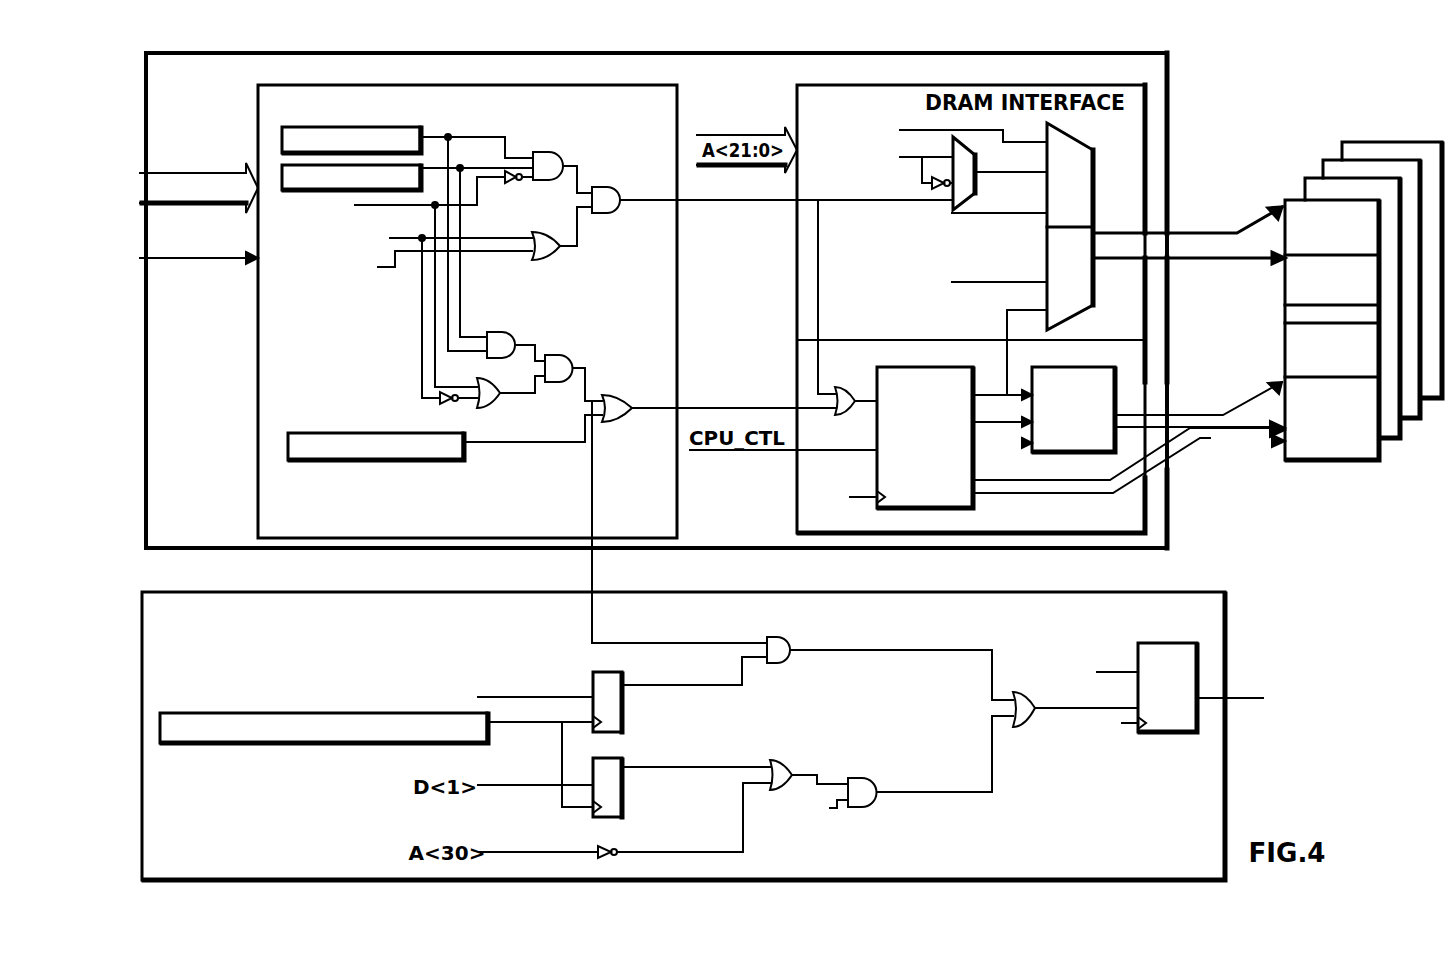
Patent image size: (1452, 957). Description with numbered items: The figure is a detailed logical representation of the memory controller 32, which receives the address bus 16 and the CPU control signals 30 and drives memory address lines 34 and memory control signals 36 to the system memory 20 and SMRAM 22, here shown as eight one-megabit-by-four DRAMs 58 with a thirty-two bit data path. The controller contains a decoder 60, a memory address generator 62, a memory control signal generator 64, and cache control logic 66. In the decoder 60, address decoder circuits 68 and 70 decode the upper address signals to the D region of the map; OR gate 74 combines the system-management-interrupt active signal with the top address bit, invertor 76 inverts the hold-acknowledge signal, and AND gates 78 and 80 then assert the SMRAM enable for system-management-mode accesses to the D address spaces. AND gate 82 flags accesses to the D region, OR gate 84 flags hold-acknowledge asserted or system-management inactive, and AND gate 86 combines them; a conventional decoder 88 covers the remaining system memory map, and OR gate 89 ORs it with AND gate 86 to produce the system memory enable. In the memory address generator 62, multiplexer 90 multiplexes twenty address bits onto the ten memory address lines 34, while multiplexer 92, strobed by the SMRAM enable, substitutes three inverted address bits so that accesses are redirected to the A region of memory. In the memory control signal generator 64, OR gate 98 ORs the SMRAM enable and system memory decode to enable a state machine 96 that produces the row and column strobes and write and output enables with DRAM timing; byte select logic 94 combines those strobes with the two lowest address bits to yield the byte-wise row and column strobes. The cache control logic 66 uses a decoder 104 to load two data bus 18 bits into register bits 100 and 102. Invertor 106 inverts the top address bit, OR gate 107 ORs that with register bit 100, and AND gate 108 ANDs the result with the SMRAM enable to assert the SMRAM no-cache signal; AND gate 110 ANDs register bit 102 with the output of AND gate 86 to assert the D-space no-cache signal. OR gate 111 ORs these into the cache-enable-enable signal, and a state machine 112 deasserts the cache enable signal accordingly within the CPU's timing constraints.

The address bus 16 is at (185, 172).
The data bus 18 is at (533, 722).
The system memory 20 is at (1330, 462).
The SMRAM 22 is at (1285, 349).
The CPU control signals 30 is at (180, 262).
The memory controller 32 is at (1169, 56).
The memory address lines 34 is at (1205, 262).
The memory control signals 36 is at (1270, 448).
The DRAMs 58 is at (1395, 459).
The decoder 60 is at (679, 101).
The memory address generator 62 is at (797, 272).
The memory control signal generator 64 is at (797, 340).
The cache control logic 66 is at (975, 595).
The address decoder circuit 68 is at (378, 127).
The address decoder circuit 70 is at (284, 199).
The OR gate 74 is at (556, 258).
The invertor 76 is at (520, 181).
The AND gate 78 is at (559, 153).
The AND gate 80 is at (622, 188).
The AND gate 82 is at (512, 333).
The OR gate 84 is at (496, 405).
The AND gate 86 is at (570, 356).
The decoder 88 is at (467, 452).
The OR gate 89 is at (628, 397).
The multiplexer 90 is at (1080, 150).
The multiplexer 92 is at (978, 180).
The byte select logic 94 is at (1085, 367).
The state machine 96 is at (965, 500).
The OR gate 98 is at (856, 416).
The register bit 100 is at (623, 762).
The register bit 102 is at (623, 707).
The decoder 104 is at (348, 712).
The invertor 106 is at (606, 845).
The OR gate 107 is at (773, 762).
The AND gate 108 is at (872, 803).
The AND gate 110 is at (785, 636).
The OR gate 111 is at (1027, 725).
The state machine 112 is at (1160, 733).